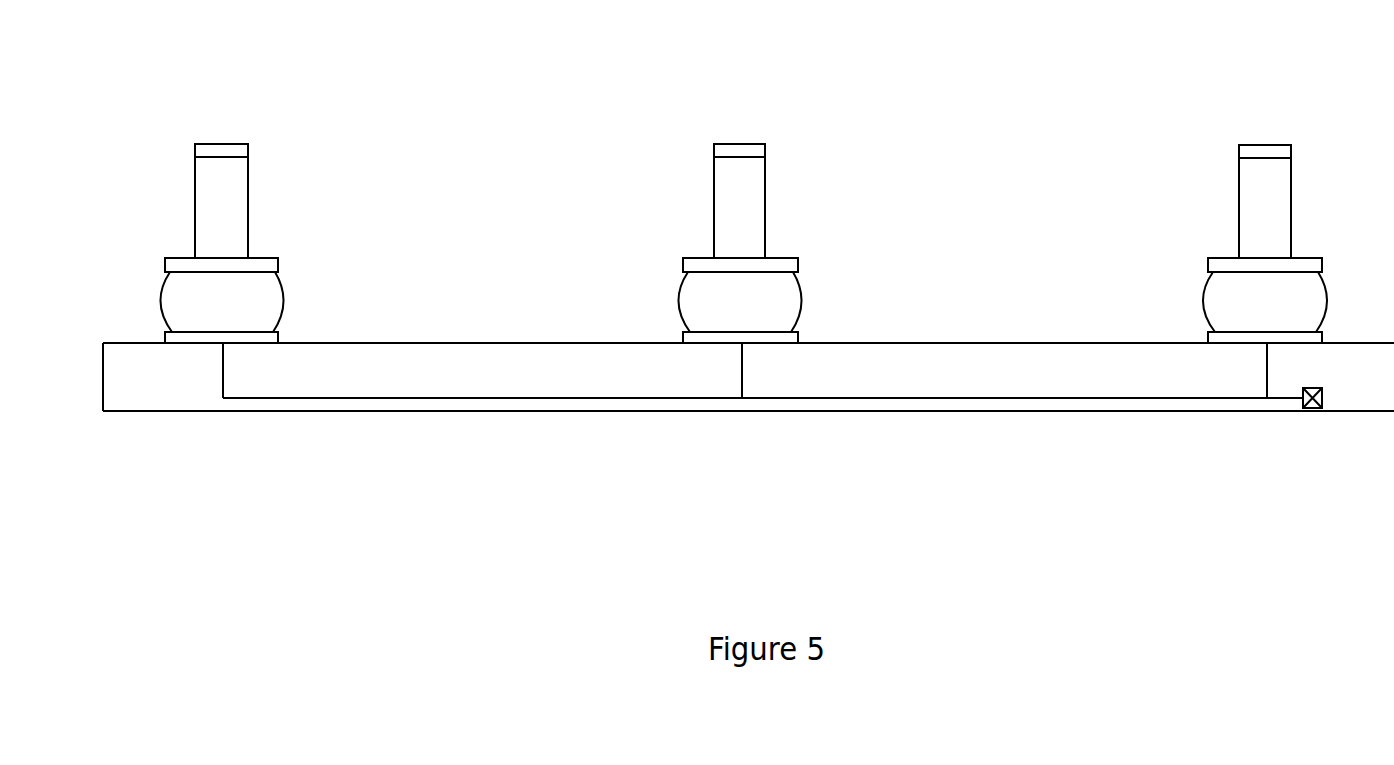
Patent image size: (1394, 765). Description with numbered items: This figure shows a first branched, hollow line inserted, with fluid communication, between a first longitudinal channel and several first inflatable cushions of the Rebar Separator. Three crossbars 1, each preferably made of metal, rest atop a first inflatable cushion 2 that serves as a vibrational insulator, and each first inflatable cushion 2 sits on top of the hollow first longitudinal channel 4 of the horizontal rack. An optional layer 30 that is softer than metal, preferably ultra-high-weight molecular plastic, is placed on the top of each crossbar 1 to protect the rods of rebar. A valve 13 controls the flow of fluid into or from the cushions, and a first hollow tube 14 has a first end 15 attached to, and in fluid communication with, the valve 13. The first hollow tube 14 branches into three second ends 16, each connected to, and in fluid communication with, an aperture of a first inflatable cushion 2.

The crossbar 1 is at (235, 189).
The first inflatable cushion 2 is at (263, 300).
The first longitudinal channel 4 is at (502, 363).
The valve 13 is at (1313, 408).
The first hollow tube 14 is at (633, 400).
The first end 15 is at (1292, 400).
The second ends 16 is at (225, 358).
The layer 30 is at (232, 148).